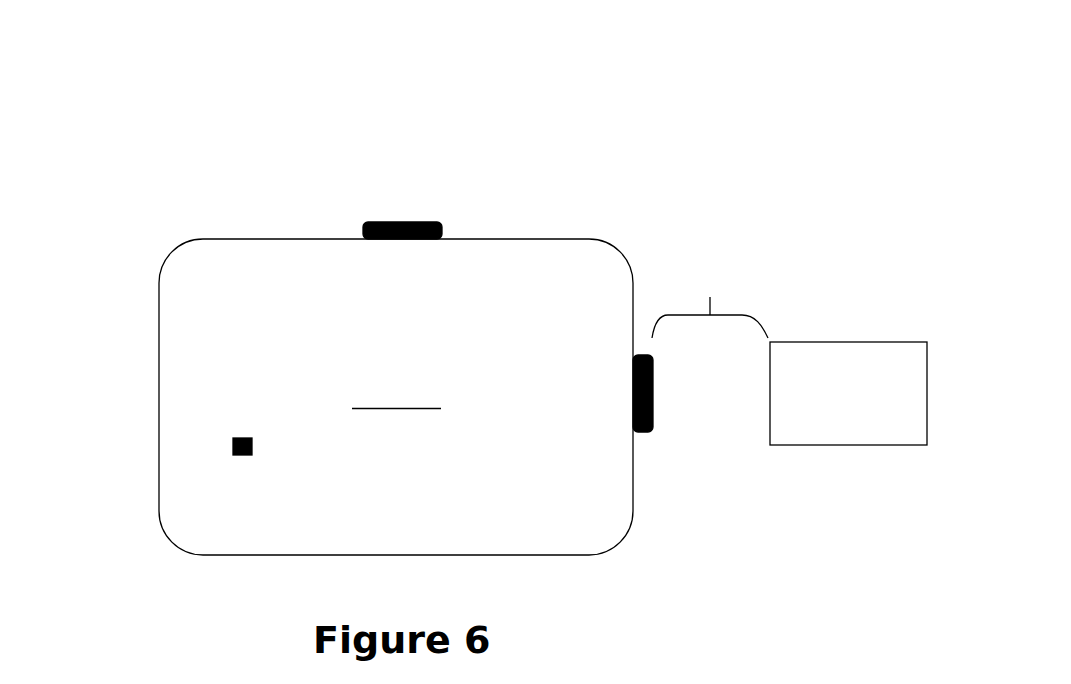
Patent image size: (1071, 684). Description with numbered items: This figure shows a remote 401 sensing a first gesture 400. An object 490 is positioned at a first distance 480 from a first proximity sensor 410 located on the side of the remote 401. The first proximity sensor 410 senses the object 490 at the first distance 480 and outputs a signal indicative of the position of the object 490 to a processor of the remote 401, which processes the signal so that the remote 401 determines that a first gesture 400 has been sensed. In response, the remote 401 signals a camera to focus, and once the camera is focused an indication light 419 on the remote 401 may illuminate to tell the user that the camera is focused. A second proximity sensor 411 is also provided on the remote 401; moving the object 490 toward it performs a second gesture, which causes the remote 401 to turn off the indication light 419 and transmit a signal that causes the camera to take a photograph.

The first gesture 400 is at (677, 43).
The remote 401 is at (622, 253).
The first proximity sensor 410 is at (650, 430).
The second proximity sensor 411 is at (403, 222).
The indication light 419 is at (236, 457).
The first distance 480 is at (710, 297).
The object 490 is at (849, 343).